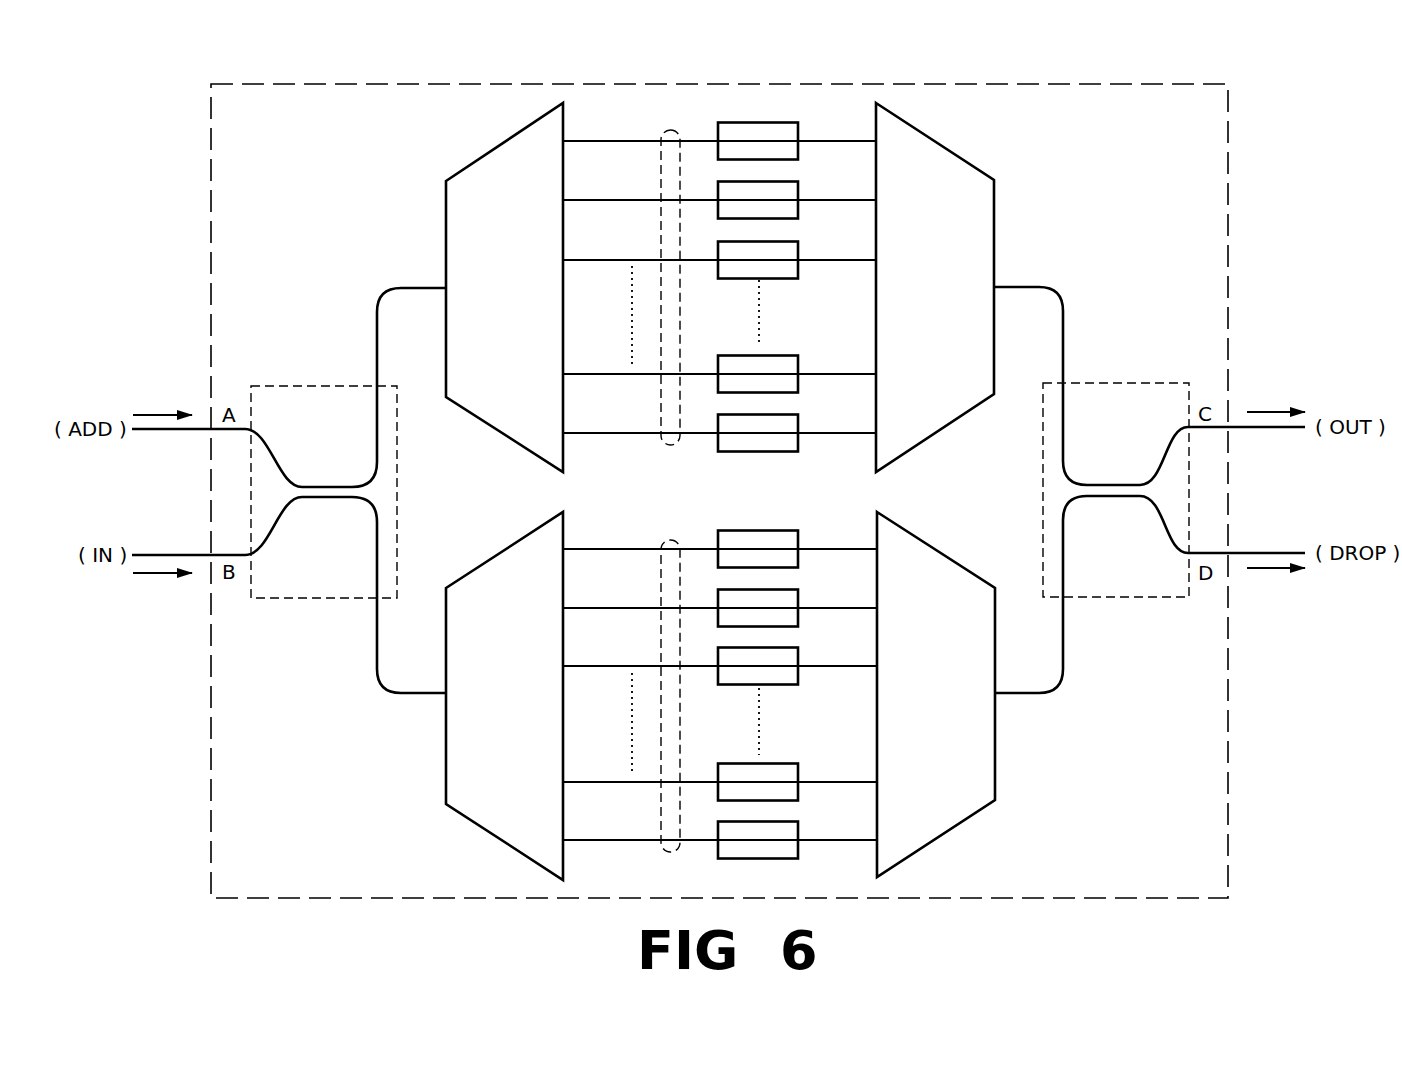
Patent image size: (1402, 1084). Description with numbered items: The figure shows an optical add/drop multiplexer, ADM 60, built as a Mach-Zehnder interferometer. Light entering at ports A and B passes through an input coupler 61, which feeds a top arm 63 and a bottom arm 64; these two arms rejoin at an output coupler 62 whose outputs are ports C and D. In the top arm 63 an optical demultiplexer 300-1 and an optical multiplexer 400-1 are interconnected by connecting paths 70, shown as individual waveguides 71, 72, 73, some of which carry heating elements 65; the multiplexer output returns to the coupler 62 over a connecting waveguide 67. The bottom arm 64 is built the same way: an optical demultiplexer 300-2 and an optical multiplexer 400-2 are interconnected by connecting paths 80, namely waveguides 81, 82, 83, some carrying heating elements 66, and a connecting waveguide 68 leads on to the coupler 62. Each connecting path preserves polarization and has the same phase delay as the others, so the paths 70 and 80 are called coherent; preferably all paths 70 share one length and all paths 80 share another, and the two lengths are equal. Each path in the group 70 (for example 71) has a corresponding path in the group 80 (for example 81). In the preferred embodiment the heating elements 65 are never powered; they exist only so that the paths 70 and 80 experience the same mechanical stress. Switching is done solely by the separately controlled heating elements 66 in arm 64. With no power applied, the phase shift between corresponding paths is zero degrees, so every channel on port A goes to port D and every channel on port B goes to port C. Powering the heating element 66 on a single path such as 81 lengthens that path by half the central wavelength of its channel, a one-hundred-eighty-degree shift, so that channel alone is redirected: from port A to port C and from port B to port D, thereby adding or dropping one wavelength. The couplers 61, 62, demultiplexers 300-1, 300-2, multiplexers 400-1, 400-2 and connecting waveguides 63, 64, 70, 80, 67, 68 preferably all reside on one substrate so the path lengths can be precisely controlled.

The ADM 60 is at (210, 180).
The coupler 61 is at (318, 384).
The coupler 62 is at (1110, 383).
The top arm 63 is at (376, 337).
The bottom arm 64 is at (376, 648).
The heating elements 65 is at (798, 123).
The heating elements 66 is at (798, 531).
The connecting waveguide 67 is at (1063, 336).
The connecting waveguide 68 is at (1063, 645).
The coherent connecting paths 70 is at (670, 133).
The connecting path 71 is at (582, 141).
The connecting path 72 is at (582, 200).
The connecting path 73 is at (582, 260).
The coherent connecting paths 80 is at (670, 540).
The optical path 81 is at (582, 549).
The connecting path 82 is at (582, 608).
The connecting path 83 is at (582, 666).
The optical demultiplexer 300-1 is at (504, 141).
The optical demultiplexer 300-2 is at (504, 549).
The optical multiplexer 400-1 is at (935, 141).
The optical multiplexer 400-2 is at (935, 550).